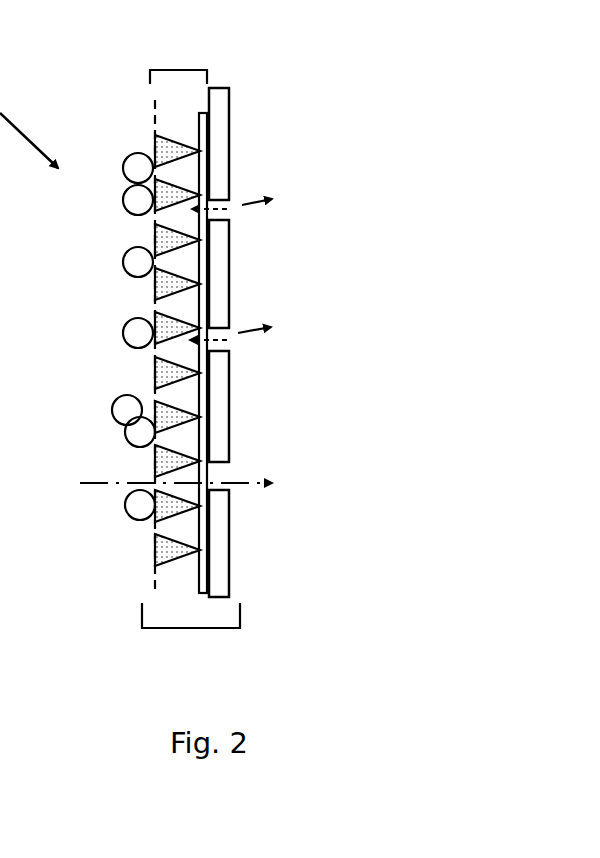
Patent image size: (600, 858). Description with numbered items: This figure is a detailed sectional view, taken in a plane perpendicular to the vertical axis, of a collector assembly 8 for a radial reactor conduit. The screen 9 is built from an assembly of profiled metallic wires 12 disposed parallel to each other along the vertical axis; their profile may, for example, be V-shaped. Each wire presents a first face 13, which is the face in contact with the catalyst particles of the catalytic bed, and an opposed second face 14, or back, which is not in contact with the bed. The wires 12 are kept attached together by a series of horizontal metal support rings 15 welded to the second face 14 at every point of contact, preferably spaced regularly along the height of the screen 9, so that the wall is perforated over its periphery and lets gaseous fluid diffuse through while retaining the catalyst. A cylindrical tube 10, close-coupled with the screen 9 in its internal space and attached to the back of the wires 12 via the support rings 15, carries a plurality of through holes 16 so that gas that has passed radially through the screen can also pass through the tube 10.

The collector assembly 8 is at (192, 628).
The screen 9 is at (178, 70).
The cylindrical tube 10 is at (229, 118).
The profiled metallic wires 12 is at (157, 145).
The first face 13 is at (155, 290).
The second face 14 is at (205, 284).
The horizontal metal support rings 15 is at (198, 575).
The through holes 16 is at (234, 214).